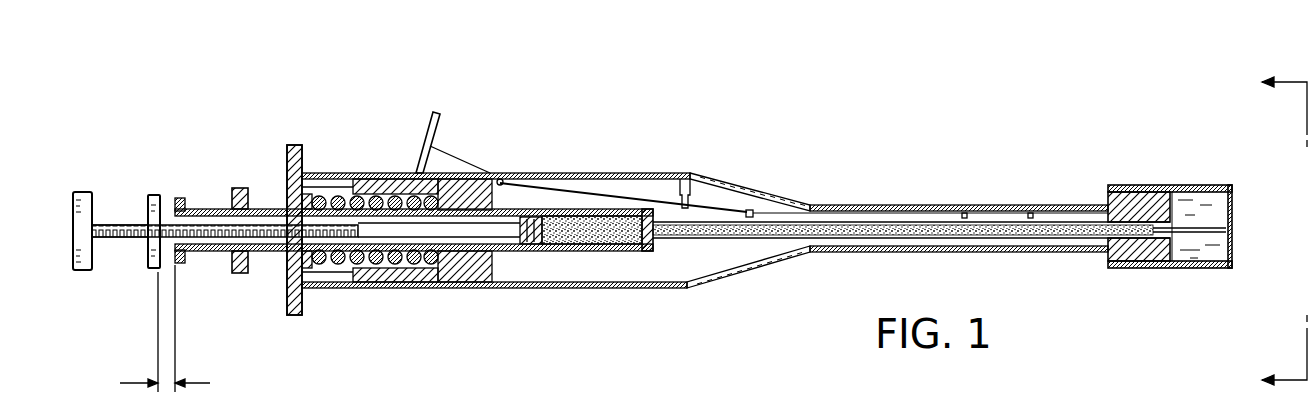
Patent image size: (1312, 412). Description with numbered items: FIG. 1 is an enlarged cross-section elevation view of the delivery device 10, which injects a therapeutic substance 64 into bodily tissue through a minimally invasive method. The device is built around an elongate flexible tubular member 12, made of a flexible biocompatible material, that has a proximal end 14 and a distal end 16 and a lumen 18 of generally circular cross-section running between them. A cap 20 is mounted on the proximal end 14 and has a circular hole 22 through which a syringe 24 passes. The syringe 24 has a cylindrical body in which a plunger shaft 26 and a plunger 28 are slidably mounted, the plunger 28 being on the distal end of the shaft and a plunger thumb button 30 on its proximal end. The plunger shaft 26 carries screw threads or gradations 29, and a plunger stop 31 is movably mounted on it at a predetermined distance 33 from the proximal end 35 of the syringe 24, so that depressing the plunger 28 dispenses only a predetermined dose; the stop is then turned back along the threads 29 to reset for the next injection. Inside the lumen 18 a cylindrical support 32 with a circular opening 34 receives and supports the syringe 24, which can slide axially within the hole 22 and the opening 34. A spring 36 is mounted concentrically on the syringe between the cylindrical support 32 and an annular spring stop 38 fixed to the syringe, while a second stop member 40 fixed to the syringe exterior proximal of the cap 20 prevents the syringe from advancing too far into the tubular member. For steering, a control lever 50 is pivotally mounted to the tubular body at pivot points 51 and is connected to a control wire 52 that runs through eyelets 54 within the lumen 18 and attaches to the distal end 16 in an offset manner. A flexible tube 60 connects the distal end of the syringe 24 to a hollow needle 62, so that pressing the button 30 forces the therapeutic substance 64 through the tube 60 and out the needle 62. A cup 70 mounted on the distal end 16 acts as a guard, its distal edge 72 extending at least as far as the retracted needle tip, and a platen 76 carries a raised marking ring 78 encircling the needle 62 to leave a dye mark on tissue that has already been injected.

The delivery device 10 is at (808, 126).
The elongate flexible tubular member 12 is at (772, 268).
The proximal end 14 is at (317, 290).
The distal end 16 is at (1087, 253).
The lumen 18 is at (656, 284).
The cap 20 is at (295, 316).
The circular hole 22 is at (287, 250).
The syringe 24 is at (210, 252).
The plunger shaft 26 is at (115, 224).
The plunger 28 is at (518, 251).
The screw threads or gradations 29 is at (125, 237).
The plunger thumb button 30 is at (85, 192).
The plunger stop 31 is at (157, 193).
The cylindrical support 32 is at (520, 246).
The predetermined distance 33 is at (149, 334).
The circular opening 34 is at (458, 244).
The proximal end of syringe 35 is at (180, 196).
The spring 36 is at (355, 195).
The annular spring stop 38 is at (338, 190).
The second stop member 40 is at (242, 188).
The control lever 50 is at (440, 118).
The pivot points 51 is at (418, 170).
The control wire 52 is at (648, 193).
The eyelets 54 is at (502, 180).
The flexible tube 60 is at (847, 223).
The hollow needle 62 is at (1207, 222).
The therapeutic substance 64 is at (592, 222).
The cup 70 is at (1175, 268).
The distal edge 72 is at (1233, 264).
The platen 76 is at (1140, 187).
The raised marking ring 78 is at (1180, 184).